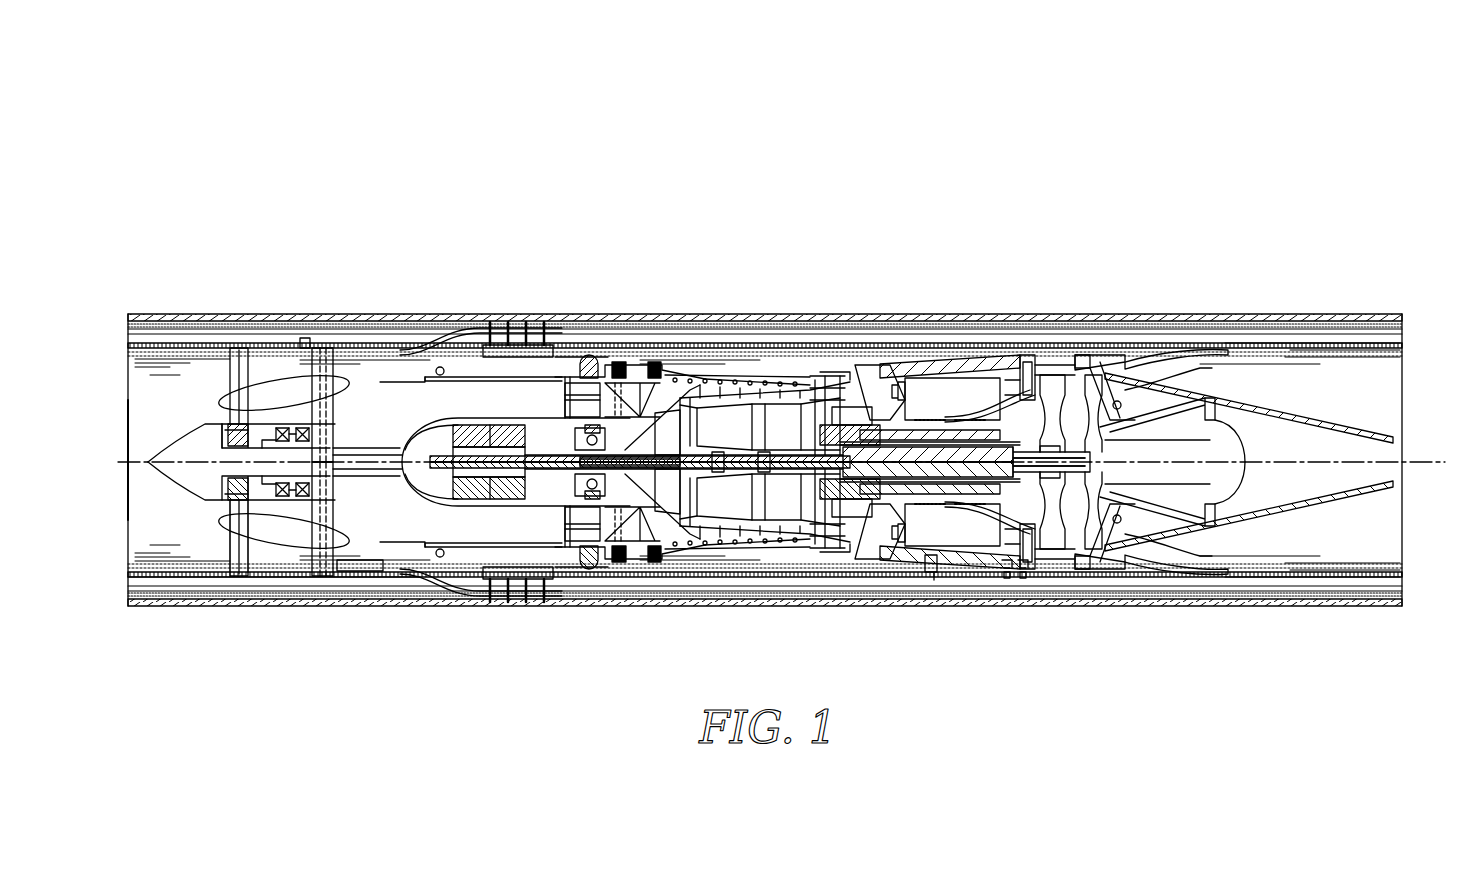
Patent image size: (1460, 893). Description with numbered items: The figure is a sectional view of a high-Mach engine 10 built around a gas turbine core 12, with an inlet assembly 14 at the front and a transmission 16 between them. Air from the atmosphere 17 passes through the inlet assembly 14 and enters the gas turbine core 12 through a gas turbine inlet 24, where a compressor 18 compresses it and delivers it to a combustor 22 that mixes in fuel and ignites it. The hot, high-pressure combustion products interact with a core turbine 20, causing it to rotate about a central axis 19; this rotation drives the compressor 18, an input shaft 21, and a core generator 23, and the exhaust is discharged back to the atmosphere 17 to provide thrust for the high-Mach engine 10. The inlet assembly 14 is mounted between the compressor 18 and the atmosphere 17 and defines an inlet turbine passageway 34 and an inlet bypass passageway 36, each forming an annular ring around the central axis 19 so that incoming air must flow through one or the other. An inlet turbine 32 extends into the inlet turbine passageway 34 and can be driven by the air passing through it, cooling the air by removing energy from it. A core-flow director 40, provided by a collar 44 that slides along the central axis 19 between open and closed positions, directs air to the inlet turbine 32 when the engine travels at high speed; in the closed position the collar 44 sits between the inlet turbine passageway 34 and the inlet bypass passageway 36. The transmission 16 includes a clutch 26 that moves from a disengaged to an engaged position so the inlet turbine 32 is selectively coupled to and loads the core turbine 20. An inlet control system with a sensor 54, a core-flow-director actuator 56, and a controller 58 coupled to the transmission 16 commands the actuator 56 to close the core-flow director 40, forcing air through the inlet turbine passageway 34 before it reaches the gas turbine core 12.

The high-Mach engine 10 is at (214, 160).
The gas turbine core 12 is at (612, 296).
The inlet assembly 14 is at (168, 297).
The transmission 16 is at (291, 408).
The atmosphere 17 is at (123, 409).
The compressor 18 is at (757, 363).
The central axis 19 is at (1410, 462).
The core turbine 20 is at (1083, 377).
The input shaft 21 is at (384, 446).
The combustor 22 is at (927, 409).
The core generator 23 is at (986, 407).
The gas turbine inlet 24 is at (545, 406).
The clutch 26 is at (303, 408).
The inlet turbine 32 is at (256, 406).
The inlet turbine passageway 34 is at (260, 520).
The inlet bypass passageway 36 is at (297, 567).
The core-flow director 40 is at (389, 569).
The collar 44 is at (423, 549).
The sensor 54 is at (316, 400).
The core-flow-director actuator 56 is at (505, 562).
The controller 58 is at (361, 571).